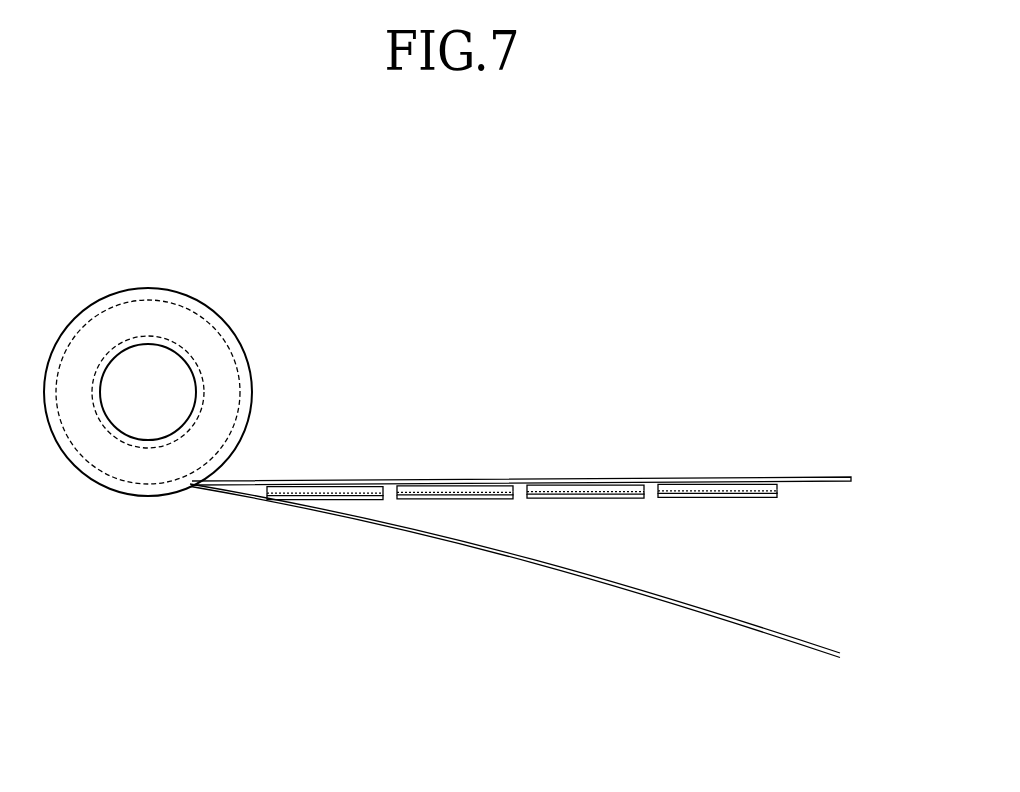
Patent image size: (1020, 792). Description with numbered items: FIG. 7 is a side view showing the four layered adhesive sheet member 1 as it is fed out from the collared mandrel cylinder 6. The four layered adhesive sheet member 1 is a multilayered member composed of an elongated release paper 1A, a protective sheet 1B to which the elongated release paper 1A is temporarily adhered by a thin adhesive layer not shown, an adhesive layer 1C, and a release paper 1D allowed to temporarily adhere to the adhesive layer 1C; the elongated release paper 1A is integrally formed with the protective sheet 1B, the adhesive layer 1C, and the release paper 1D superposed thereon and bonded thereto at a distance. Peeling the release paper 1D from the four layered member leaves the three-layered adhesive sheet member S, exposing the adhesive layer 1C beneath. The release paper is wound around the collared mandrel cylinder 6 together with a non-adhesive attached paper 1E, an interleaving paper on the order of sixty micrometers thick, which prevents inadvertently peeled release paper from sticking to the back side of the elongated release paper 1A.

The collared mandrel cylinder 6 is at (188, 330).
The four layered adhesive sheet member 1 is at (526, 531).
The elongated release paper 1A is at (800, 478).
The protective sheet 1B is at (777, 487).
The adhesive layer 1C is at (777, 491).
The release paper 1D is at (777, 495).
The non-adhesive attached paper 1E is at (703, 612).
The three-layered adhesive sheet member S is at (873, 492).